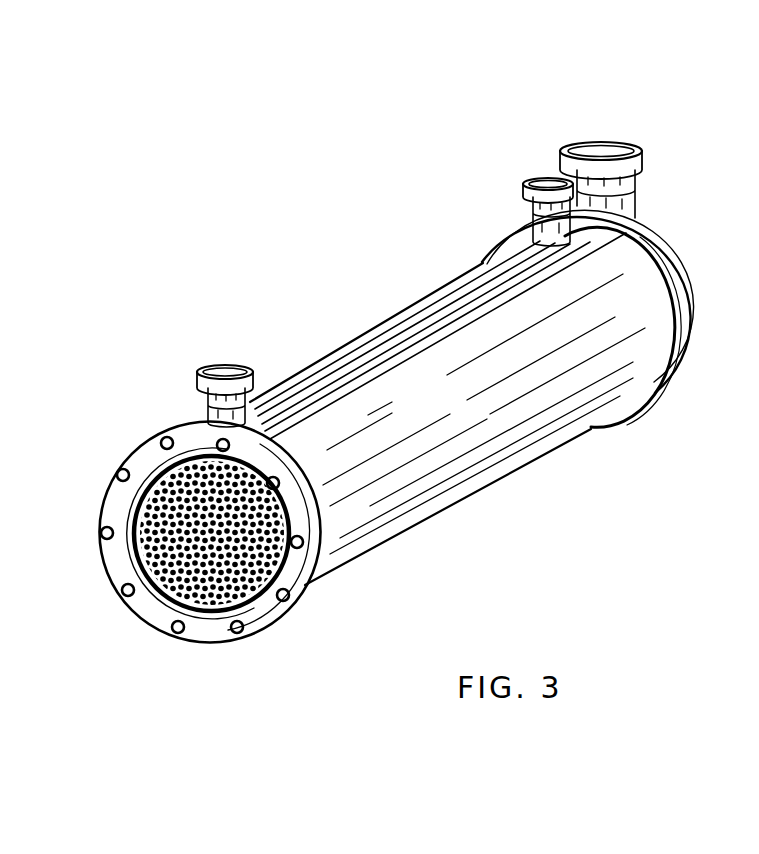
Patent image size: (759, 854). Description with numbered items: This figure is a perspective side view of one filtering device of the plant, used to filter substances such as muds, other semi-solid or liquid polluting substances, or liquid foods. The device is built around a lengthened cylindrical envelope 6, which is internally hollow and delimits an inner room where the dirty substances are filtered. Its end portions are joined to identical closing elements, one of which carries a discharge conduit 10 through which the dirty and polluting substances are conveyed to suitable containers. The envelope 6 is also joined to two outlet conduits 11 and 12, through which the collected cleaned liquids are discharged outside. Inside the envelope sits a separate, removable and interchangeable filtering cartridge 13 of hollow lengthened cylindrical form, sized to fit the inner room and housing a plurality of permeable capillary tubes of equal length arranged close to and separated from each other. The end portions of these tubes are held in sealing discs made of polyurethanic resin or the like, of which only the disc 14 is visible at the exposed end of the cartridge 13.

The cylindrical envelope 6 is at (495, 482).
The discharge conduit 10 is at (617, 142).
The outlet conduit 11 is at (224, 365).
The outlet conduit 12 is at (539, 177).
The filtering cartridge 13 is at (250, 585).
The sealing disc 14 is at (158, 602).